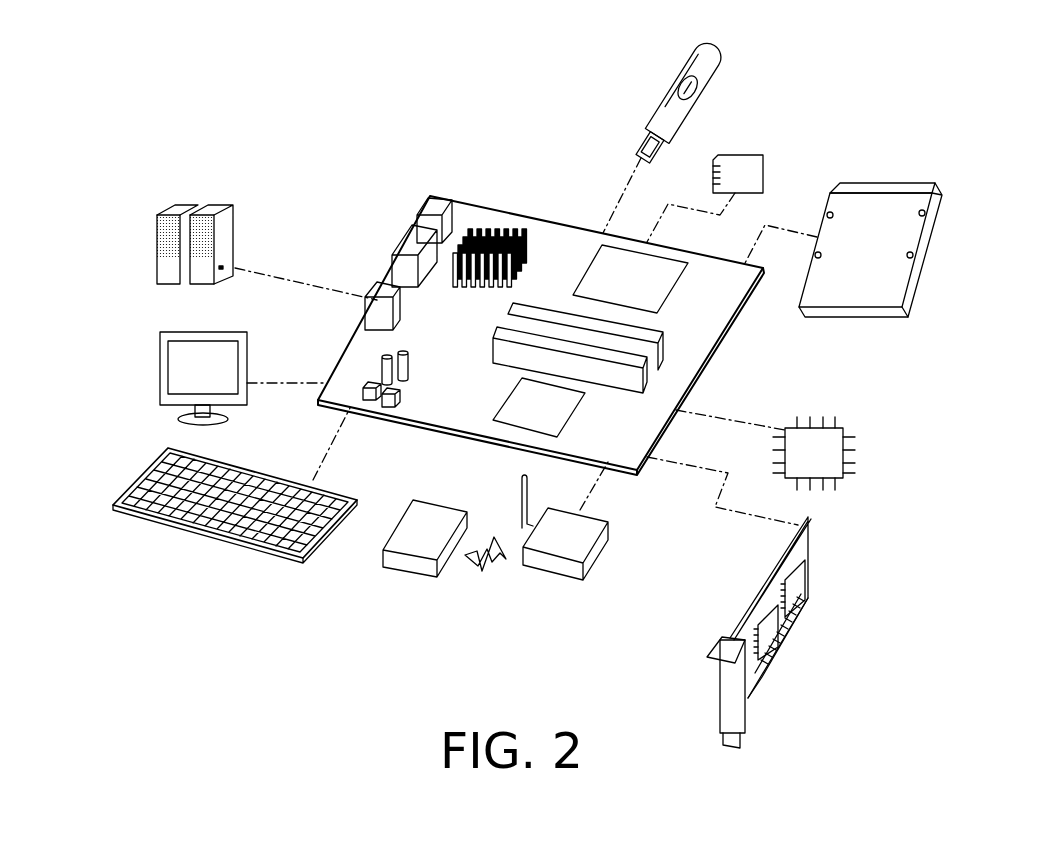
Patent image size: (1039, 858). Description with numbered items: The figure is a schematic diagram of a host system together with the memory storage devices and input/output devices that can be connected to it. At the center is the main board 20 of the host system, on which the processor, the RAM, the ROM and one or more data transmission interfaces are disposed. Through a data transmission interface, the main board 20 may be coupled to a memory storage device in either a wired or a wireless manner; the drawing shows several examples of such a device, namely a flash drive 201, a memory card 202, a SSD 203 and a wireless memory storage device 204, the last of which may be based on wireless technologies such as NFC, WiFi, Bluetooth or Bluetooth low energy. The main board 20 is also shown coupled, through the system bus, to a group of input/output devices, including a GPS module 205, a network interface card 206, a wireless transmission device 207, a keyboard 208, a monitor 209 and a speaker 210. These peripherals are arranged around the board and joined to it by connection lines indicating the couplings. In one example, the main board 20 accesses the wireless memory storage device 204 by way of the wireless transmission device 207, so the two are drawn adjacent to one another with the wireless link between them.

The main board 20 is at (544, 238).
The flash drive 201 is at (666, 92).
The memory card 202 is at (768, 162).
The SSD (Solid State Drive) 203 is at (891, 182).
The wireless memory storage device 204 is at (405, 510).
The GPS module 205 is at (851, 452).
The network interface card 206 is at (812, 573).
The wireless transmission device 207 is at (603, 560).
The keyboard 208 is at (238, 545).
The monitor 209 is at (158, 386).
The speaker 210 is at (155, 270).